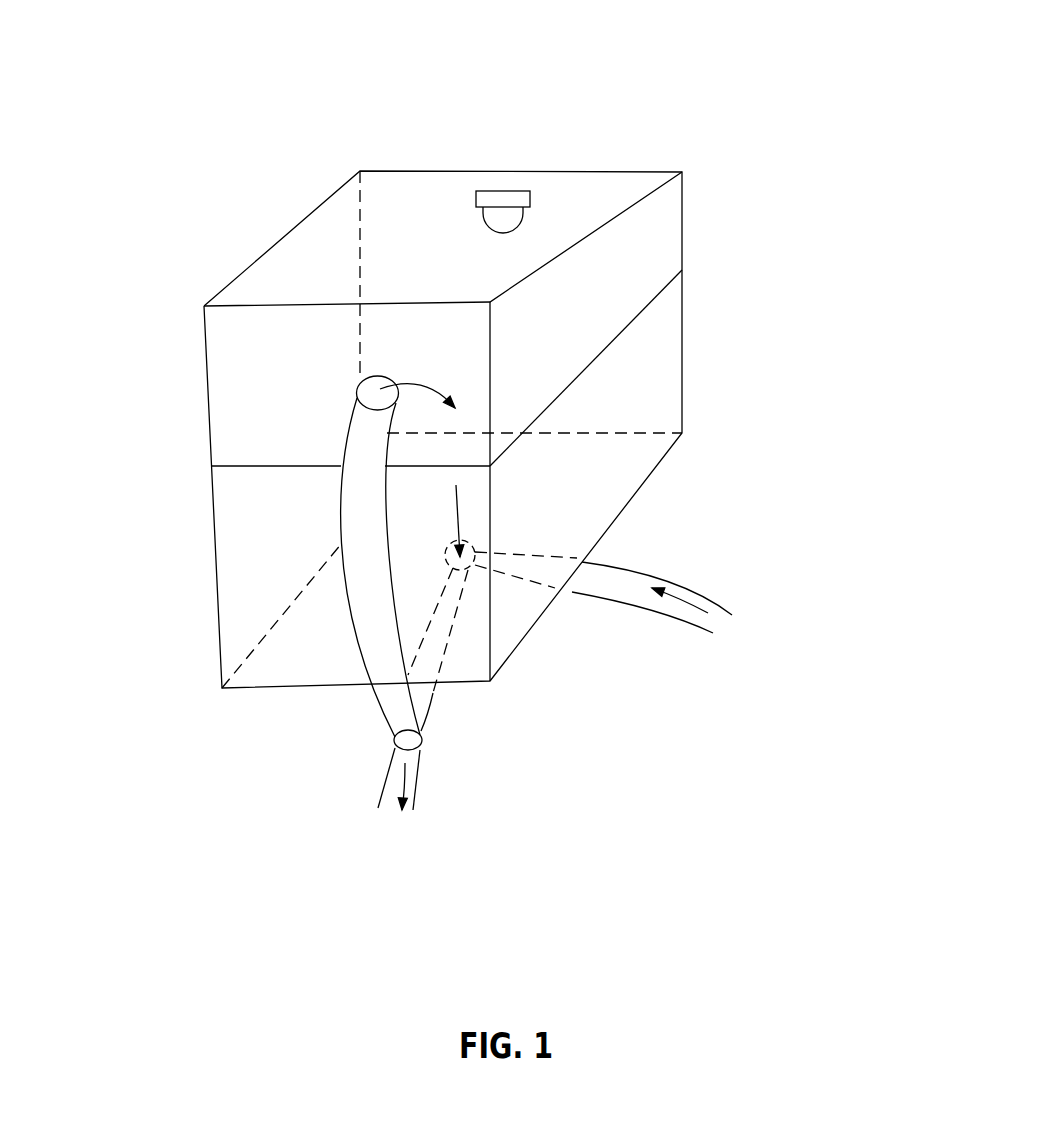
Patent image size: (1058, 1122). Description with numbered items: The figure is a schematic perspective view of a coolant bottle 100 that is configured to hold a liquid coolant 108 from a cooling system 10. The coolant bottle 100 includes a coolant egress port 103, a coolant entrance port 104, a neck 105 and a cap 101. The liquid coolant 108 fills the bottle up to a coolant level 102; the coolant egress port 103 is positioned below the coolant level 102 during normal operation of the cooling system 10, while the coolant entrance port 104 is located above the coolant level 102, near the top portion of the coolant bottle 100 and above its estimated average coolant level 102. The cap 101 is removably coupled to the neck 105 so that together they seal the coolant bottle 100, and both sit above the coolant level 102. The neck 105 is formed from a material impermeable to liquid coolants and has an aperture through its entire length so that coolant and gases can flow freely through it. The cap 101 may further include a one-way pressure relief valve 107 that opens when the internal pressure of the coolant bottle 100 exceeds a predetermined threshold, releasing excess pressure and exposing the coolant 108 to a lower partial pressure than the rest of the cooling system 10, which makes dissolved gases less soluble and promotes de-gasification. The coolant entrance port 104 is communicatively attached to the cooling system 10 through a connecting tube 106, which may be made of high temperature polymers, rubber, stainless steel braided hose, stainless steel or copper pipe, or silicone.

The coolant bottle 100 is at (409, 388).
The cap 101 is at (518, 182).
The coolant level 102 is at (598, 372).
The coolant egress port 103 is at (467, 538).
The coolant entrance port 104 is at (358, 405).
The neck 105 is at (530, 218).
The connecting tube 106 is at (345, 602).
The one-way pressure relief valve 107 is at (590, 121).
The coolant 108 is at (655, 590).
The cooling system 10 is at (457, 811).